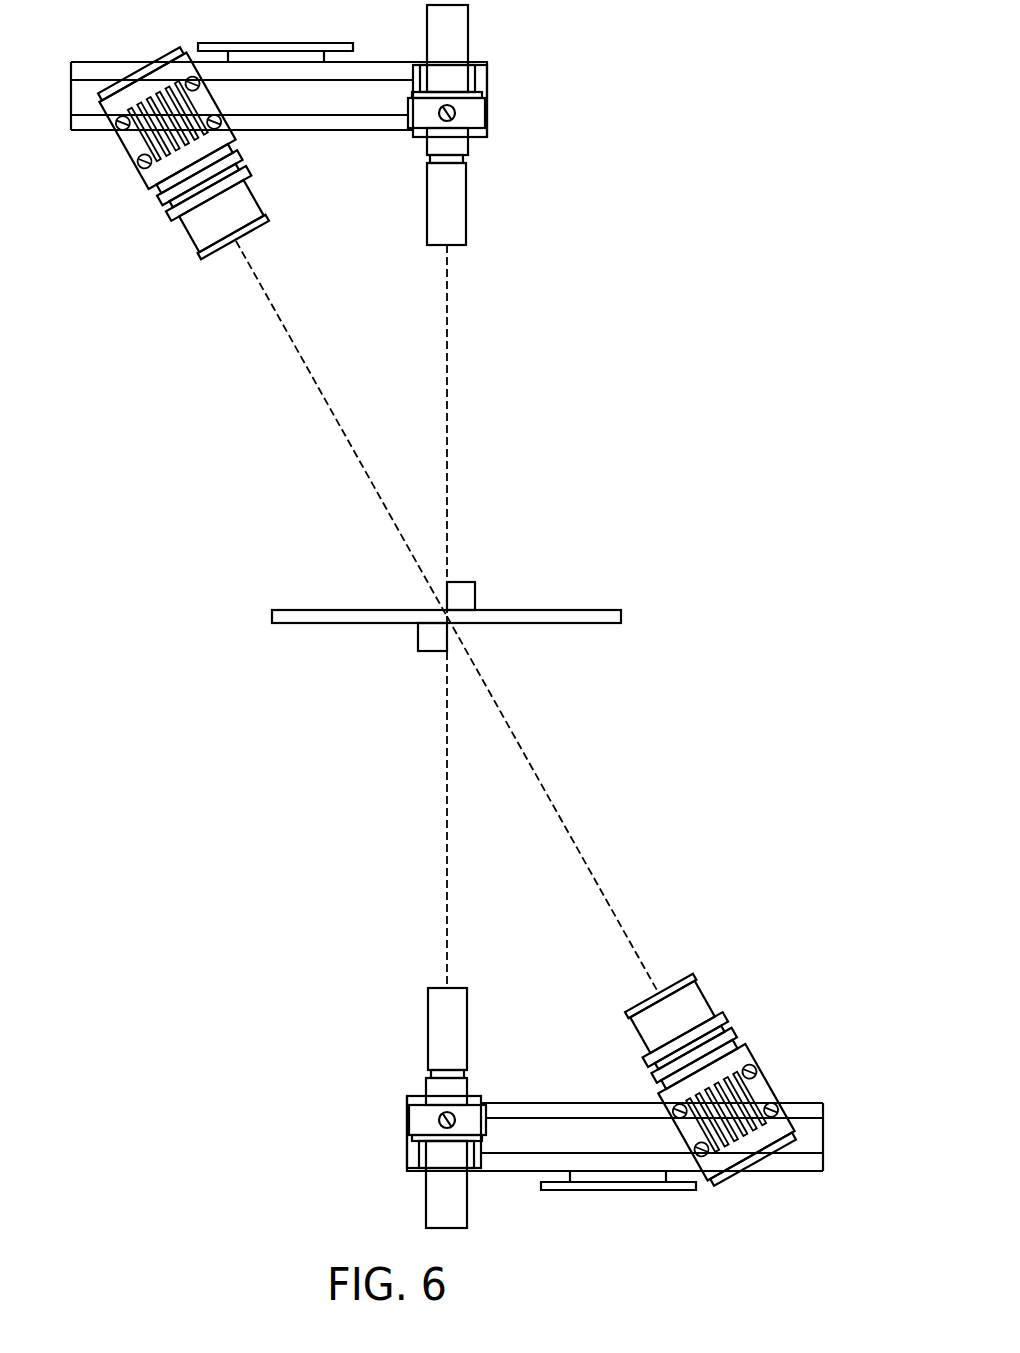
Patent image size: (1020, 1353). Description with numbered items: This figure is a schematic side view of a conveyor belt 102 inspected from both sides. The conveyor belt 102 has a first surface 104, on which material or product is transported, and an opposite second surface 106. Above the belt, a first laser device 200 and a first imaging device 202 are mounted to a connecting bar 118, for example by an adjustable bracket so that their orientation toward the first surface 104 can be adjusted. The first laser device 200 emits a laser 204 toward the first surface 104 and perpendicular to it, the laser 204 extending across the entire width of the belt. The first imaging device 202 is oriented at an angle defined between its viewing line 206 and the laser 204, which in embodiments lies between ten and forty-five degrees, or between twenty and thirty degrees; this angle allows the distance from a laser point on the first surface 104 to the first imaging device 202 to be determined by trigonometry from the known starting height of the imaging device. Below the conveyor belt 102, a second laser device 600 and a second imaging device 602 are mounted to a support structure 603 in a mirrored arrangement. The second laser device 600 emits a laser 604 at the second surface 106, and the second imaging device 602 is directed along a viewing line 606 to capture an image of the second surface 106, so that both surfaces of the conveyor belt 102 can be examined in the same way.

The conveyor belt 102 is at (630, 611).
The first surface 104 is at (588, 608).
The second surface 106 is at (588, 625).
The connecting bar 118 is at (257, 60).
The first laser device 200 is at (462, 38).
The first imaging device 202 is at (122, 163).
The laser 204 is at (448, 375).
The viewing line 206 is at (337, 419).
The second laser device 600 is at (427, 1030).
The second imaging device 602 is at (715, 1013).
The support structure 603 is at (522, 1171).
The laser 604 is at (447, 792).
The viewing line 606 is at (570, 832).